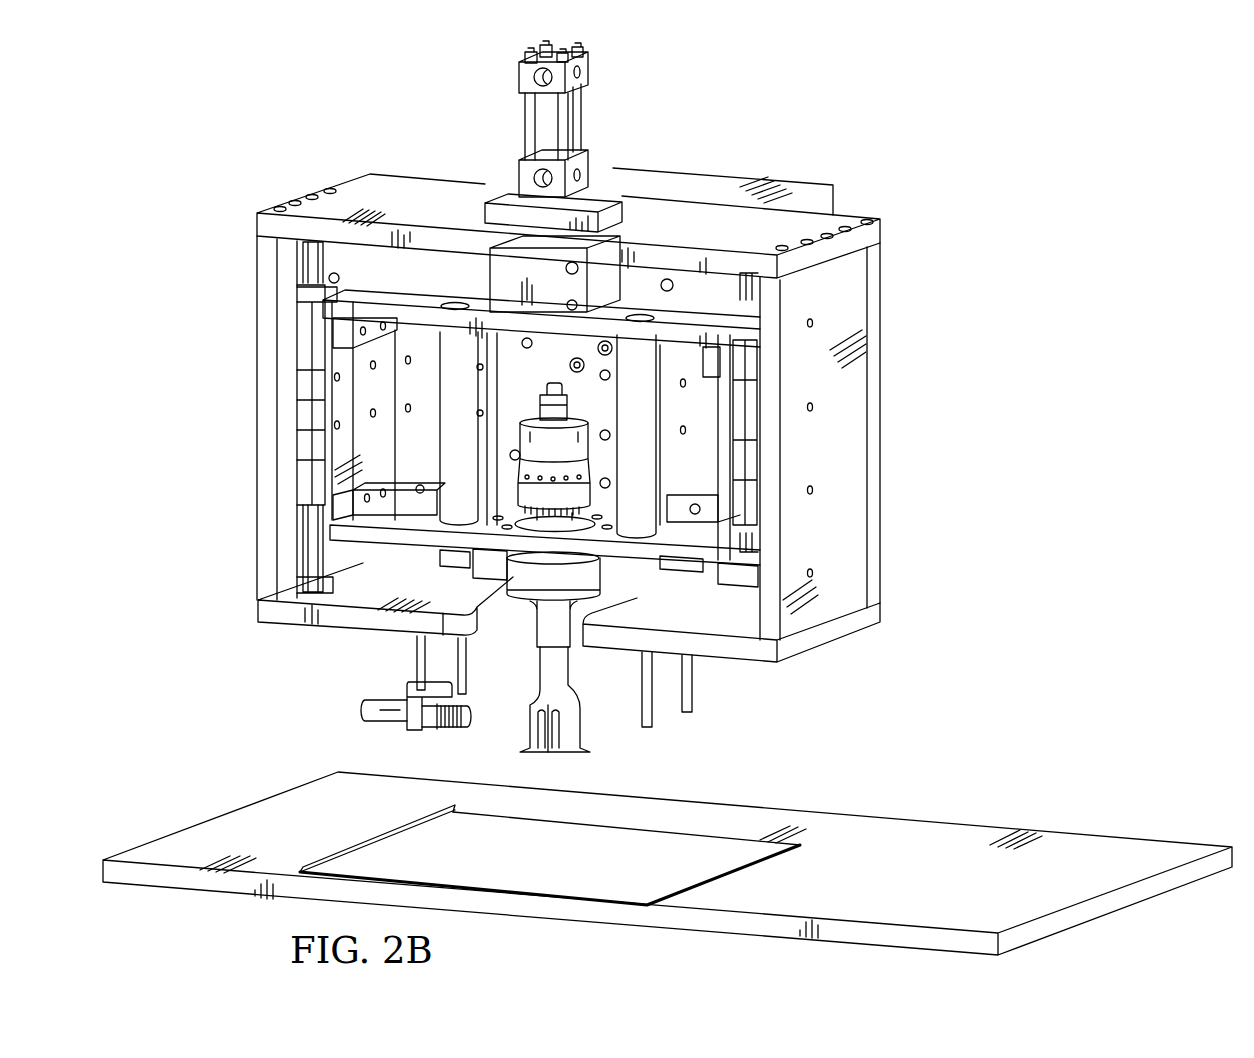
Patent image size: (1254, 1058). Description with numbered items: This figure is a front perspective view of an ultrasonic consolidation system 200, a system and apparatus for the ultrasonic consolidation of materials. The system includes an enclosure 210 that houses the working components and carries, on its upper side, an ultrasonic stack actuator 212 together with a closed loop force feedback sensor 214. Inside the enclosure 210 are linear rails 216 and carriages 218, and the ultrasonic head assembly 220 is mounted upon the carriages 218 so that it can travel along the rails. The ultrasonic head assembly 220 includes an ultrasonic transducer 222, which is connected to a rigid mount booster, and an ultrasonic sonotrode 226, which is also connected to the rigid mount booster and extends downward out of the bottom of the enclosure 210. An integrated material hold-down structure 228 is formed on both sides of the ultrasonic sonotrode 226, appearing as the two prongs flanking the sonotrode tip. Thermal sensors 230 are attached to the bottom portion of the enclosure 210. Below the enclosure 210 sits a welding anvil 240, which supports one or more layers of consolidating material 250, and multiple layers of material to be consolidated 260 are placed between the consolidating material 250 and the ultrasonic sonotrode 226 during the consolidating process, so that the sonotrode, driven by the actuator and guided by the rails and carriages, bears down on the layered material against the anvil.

The ultrasonic consolidation system 200 is at (170, 177).
The enclosure 210 is at (357, 186).
The ultrasonic stack actuator 212 is at (518, 170).
The closed loop force feedback sensor 214 is at (573, 280).
The linear rails 216 is at (304, 264).
The carriages 218 is at (305, 455).
The ultrasonic head assembly 220 is at (686, 298).
The ultrasonic transducer 222 is at (530, 412).
The ultrasonic sonotrode 226 is at (548, 758).
The prongs 228 is at (522, 750).
The thermal sensors 230 is at (382, 697).
The welding anvil 240 is at (172, 893).
The consolidating material 250 is at (370, 841).
The layers of material to be consolidated 260 is at (708, 832).